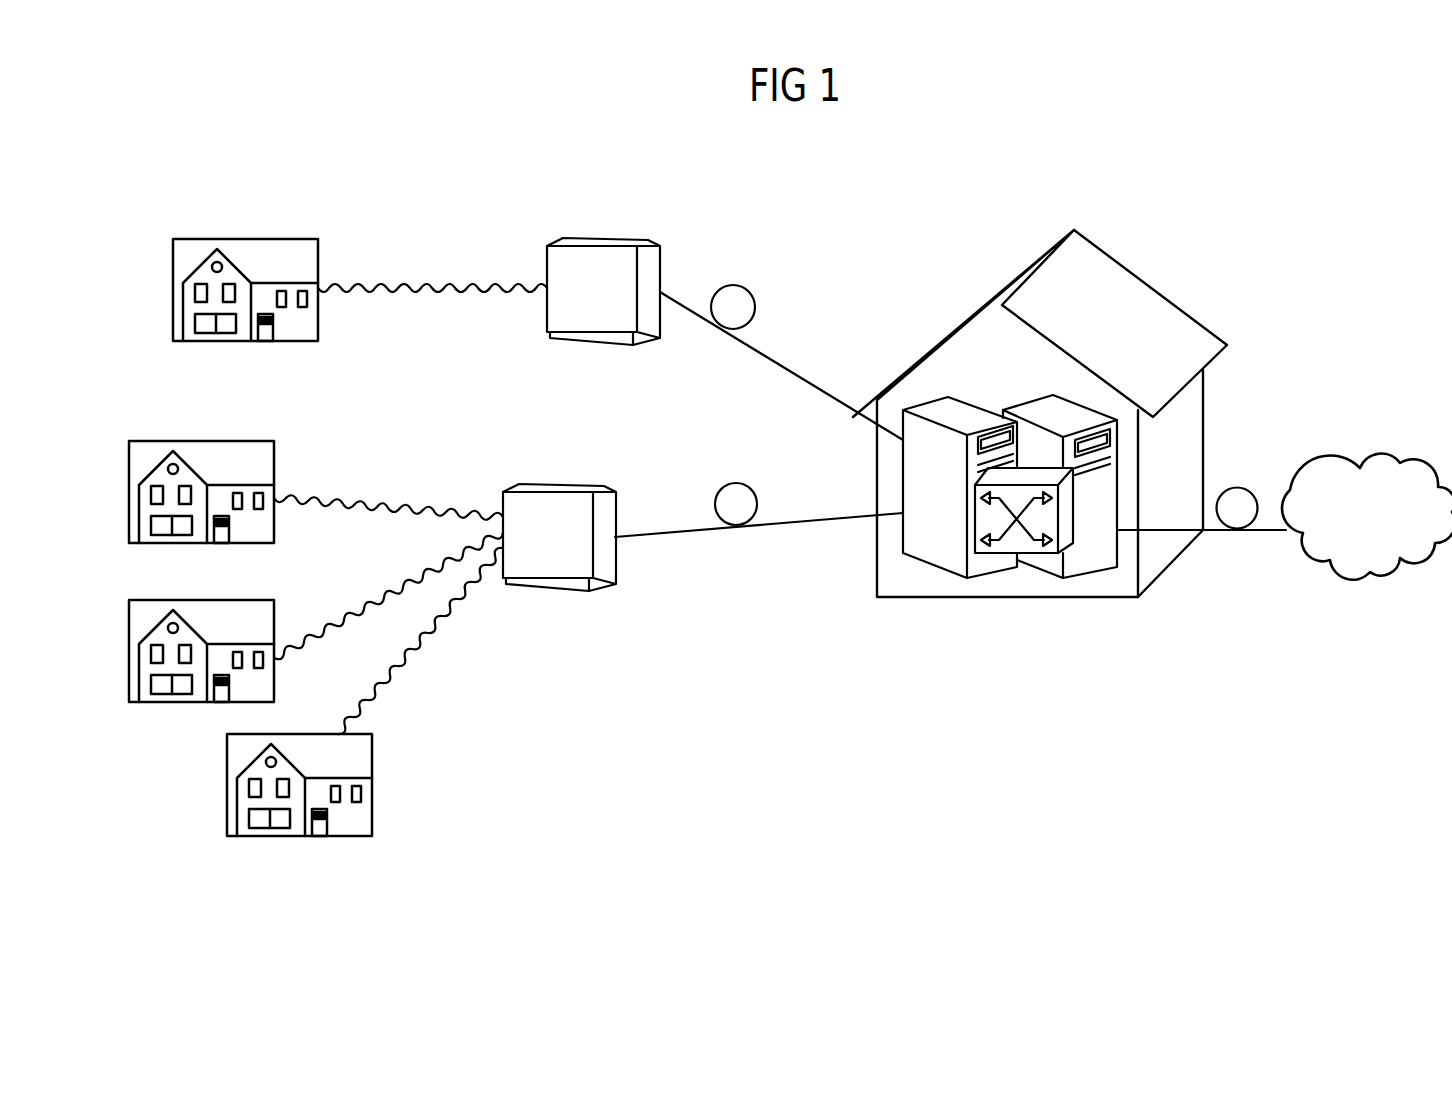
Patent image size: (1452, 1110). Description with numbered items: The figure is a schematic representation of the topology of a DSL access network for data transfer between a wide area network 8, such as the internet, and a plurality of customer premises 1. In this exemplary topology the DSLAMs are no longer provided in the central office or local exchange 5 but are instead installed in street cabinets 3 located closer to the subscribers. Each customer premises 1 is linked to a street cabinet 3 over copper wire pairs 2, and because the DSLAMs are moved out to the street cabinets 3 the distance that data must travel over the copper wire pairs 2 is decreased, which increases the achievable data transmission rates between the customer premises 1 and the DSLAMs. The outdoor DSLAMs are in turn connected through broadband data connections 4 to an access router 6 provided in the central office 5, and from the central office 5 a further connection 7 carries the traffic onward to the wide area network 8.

The customer premises 1 is at (318, 259).
The copper wire pairs 2 is at (482, 284).
The street cabinets 3 is at (612, 240).
The broadband data connections 4 is at (768, 358).
The central office 5 is at (980, 303).
The access router 6 is at (1000, 572).
The network connection link 7 is at (1232, 487).
The wide area network 8 is at (1375, 576).